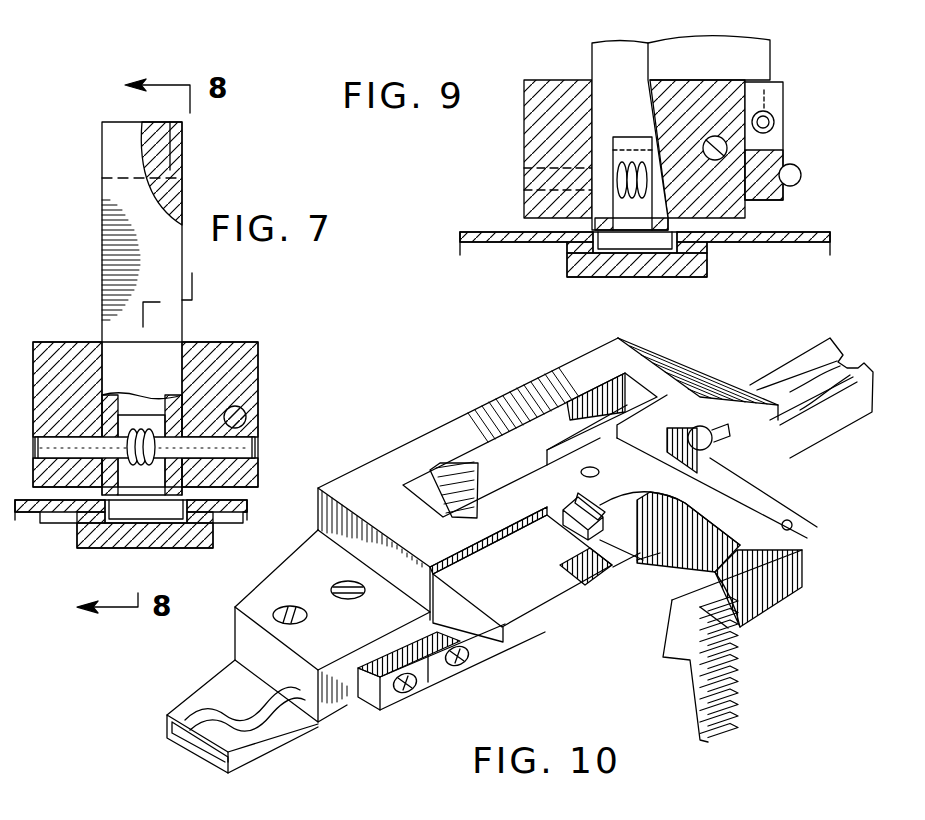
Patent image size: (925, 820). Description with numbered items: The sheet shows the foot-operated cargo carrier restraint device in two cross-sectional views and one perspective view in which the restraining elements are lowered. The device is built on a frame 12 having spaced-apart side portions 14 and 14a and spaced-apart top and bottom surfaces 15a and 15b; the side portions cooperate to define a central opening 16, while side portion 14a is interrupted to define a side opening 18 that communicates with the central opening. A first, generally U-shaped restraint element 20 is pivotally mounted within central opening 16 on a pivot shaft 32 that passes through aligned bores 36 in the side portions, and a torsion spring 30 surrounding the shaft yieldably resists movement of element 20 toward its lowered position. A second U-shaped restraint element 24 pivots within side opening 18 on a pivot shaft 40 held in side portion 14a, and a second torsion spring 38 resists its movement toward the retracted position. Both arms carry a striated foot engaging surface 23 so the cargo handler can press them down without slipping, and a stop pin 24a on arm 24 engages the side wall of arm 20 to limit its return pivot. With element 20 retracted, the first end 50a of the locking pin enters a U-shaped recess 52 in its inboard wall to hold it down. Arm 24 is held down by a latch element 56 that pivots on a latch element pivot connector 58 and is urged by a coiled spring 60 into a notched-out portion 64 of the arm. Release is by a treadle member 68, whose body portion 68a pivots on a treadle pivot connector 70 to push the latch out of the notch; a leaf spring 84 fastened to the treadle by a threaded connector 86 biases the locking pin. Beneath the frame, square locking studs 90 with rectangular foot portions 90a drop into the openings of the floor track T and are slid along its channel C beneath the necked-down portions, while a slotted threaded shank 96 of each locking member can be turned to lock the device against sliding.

In FIG. 7, the frame 12 is at (159, 383).
In FIG. 9, the frame 12 is at (627, 126).
In FIG. 10, the frame 12 is at (487, 469).
In FIG. 7, the side portion 14 is at (80, 342).
In FIG. 9, the side portion 14 is at (528, 82).
In FIG. 10, the side portion 14 is at (361, 467).
In FIG. 7, the side portion 14a is at (258, 354).
In FIG. 9, the side portion 14a is at (720, 82).
In FIG. 10, the side portion 14a is at (522, 554).
In FIG. 7, the top surface 15a is at (52, 342).
In FIG. 10, the top surface 15a is at (486, 412).
In FIG. 10, the bottom surface 15b is at (332, 651).
In FIG. 10, the central opening 16 is at (570, 402).
In FIG. 10, the side opening 18 is at (467, 468).
In FIG. 7, the first restraint element 20 is at (130, 308).
In FIG. 9, the first restraint element 20 is at (681, 116).
In FIG. 10, the first restraint element 20 is at (447, 467).
In FIG. 10, the striated foot engaging surface 23 is at (743, 690).
In FIG. 9, the second restraint element 24 is at (692, 52).
In FIG. 10, the second restraint element 24 is at (724, 540).
In FIG. 10, the stop pin 24a is at (792, 523).
In FIG. 7, the torsion spring 30 is at (128, 410).
In FIG. 9, the torsion spring 30 is at (617, 142).
In FIG. 7, the pivot shaft 32 is at (160, 420).
In FIG. 9, the pivot shaft 32 is at (645, 165).
In FIG. 7, the bores 36 is at (60, 440).
In FIG. 9, the bores 36 is at (524, 180).
In FIG. 10, the second torsion spring 38 is at (733, 457).
In FIG. 7, the pivot shaft 40 is at (247, 417).
In FIG. 10, the pivot shaft 40 is at (720, 430).
In FIG. 10, the first end of locking pin 50a is at (637, 560).
In FIG. 7, the U-shaped recess 52 is at (172, 165).
In FIG. 9, the latch element 56 is at (793, 146).
In FIG. 10, the latch element 56 is at (567, 537).
In FIG. 9, the latch element pivot connector 58 is at (802, 182).
In FIG. 9, the coiled spring 60 is at (775, 118).
In FIG. 10, the notched-out portion 64 is at (597, 507).
In FIG. 10, the treadle member 68 is at (530, 597).
In FIG. 10, the body portion 68a is at (580, 585).
In FIG. 10, the treadle pivot connector 70 is at (404, 697).
In FIG. 10, the leaf spring 84 is at (451, 684).
In FIG. 10, the threaded connector 86 is at (458, 672).
In FIG. 7, the locking studs 90 is at (148, 508).
In FIG. 9, the locking studs 90 is at (660, 248).
In FIG. 7, the foot portions 90a is at (118, 522).
In FIG. 9, the foot portions 90a is at (625, 240).
In FIG. 10, the threaded shank 96 is at (336, 586).
In FIG. 7, the track T is at (131, 540).
In FIG. 9, the track T is at (645, 272).
In FIG. 10, the track T is at (492, 542).
In FIG. 10, the channel C is at (200, 743).